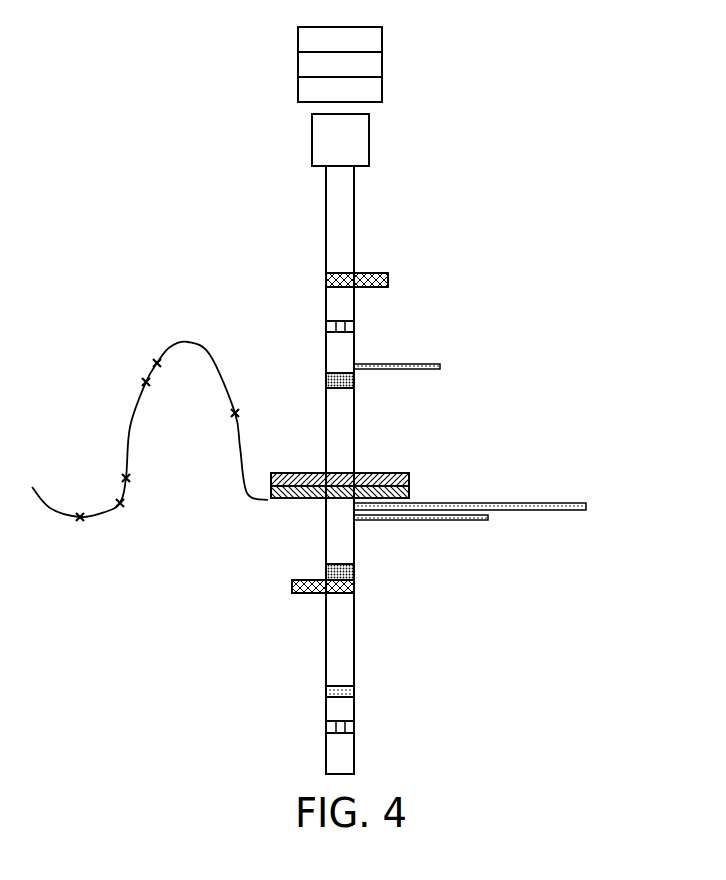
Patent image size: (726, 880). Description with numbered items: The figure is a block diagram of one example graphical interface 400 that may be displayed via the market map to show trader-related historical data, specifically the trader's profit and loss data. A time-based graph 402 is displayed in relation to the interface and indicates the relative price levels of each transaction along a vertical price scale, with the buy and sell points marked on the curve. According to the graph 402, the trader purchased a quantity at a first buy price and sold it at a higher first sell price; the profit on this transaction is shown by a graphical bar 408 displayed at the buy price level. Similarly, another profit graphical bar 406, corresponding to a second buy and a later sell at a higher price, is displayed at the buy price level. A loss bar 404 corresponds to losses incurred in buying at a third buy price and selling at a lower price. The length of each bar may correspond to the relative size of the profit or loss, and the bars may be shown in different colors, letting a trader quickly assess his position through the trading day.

The graphical interface 400 is at (430, 400).
The time-based graph 402 is at (188, 320).
The loss bar 404 is at (440, 366).
The profit graphical bar 406 is at (586, 506).
The graphical bar 408 is at (488, 517).